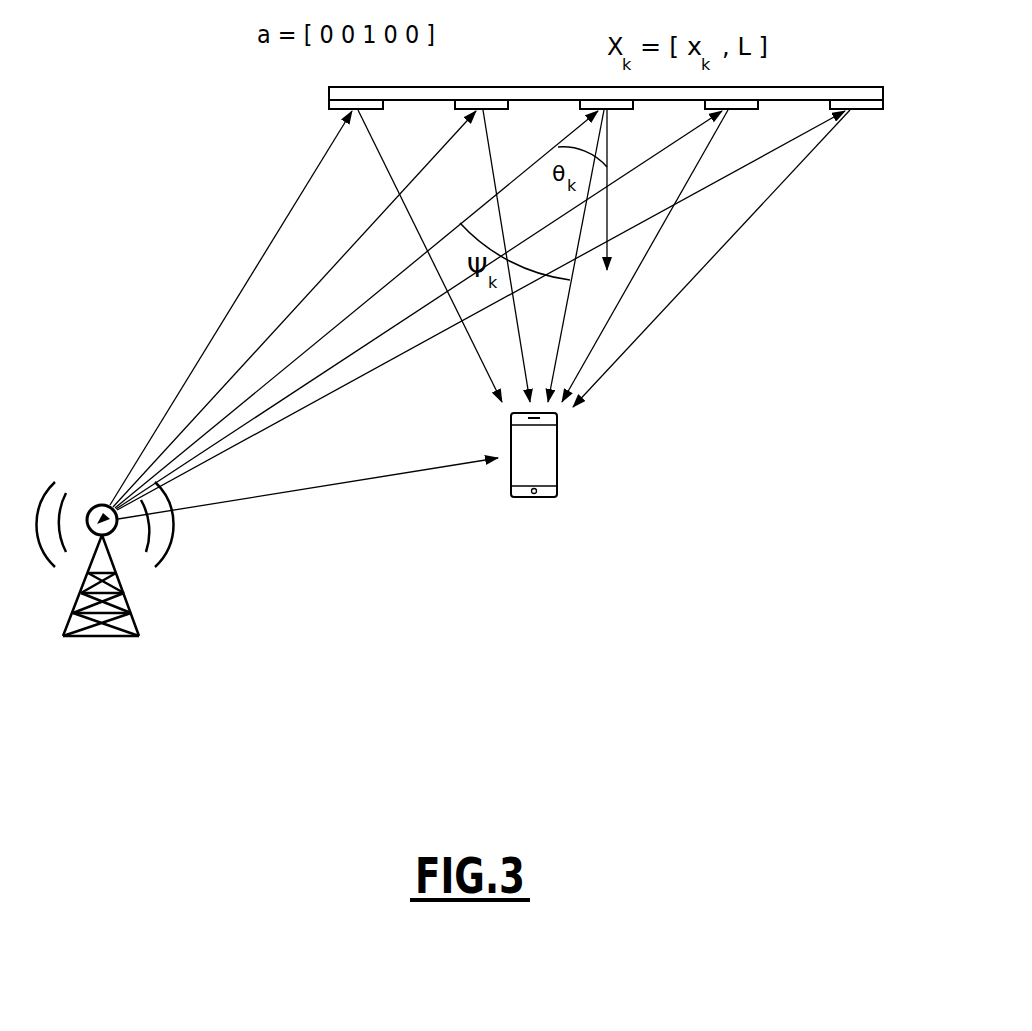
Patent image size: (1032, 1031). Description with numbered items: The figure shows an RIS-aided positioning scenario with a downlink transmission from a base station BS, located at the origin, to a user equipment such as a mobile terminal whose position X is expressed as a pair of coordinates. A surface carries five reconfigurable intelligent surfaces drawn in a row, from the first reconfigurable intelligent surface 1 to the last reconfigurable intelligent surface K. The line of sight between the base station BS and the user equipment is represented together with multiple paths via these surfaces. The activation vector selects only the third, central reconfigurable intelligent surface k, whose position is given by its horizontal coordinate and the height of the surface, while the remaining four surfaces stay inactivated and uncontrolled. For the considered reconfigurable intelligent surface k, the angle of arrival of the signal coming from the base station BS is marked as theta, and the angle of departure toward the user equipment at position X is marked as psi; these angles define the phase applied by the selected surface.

The reconfigurable intelligent surface 1 is at (333, 120).
The considered reconfigurable intelligent surface k is at (622, 120).
The K-th reconfigurable intelligent surface K is at (870, 120).
The base station BS is at (161, 559).
The user equipment position X is at (599, 455).